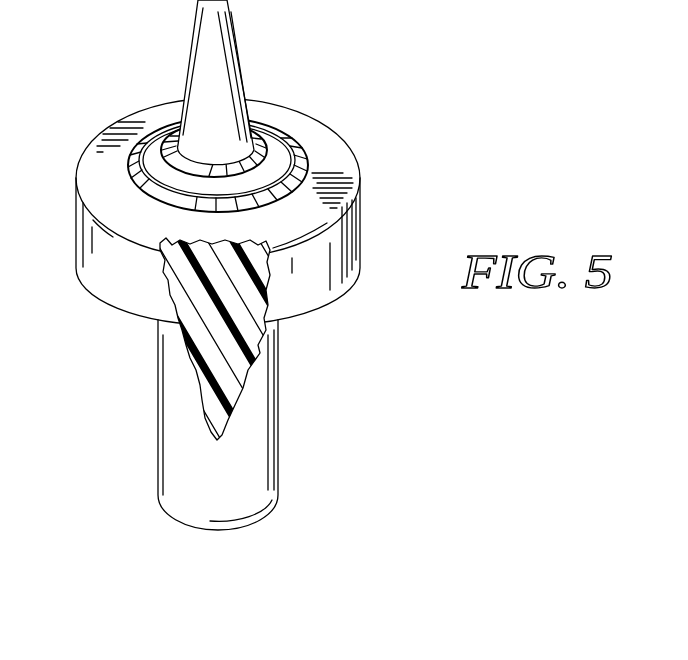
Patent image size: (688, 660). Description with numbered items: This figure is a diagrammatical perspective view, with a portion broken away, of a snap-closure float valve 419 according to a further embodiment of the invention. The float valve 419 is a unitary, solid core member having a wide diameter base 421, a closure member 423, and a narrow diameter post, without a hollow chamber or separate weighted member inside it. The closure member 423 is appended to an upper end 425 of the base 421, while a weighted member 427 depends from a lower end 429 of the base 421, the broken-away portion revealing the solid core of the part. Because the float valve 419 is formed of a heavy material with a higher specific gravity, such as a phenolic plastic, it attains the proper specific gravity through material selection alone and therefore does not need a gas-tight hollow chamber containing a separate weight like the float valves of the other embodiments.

The float valve 419 is at (70, 152).
The base 421 is at (222, 265).
The closure member 423 is at (253, 68).
The upper end 425 is at (320, 135).
The weighted member 427 is at (282, 438).
The lower end 429 is at (303, 314).